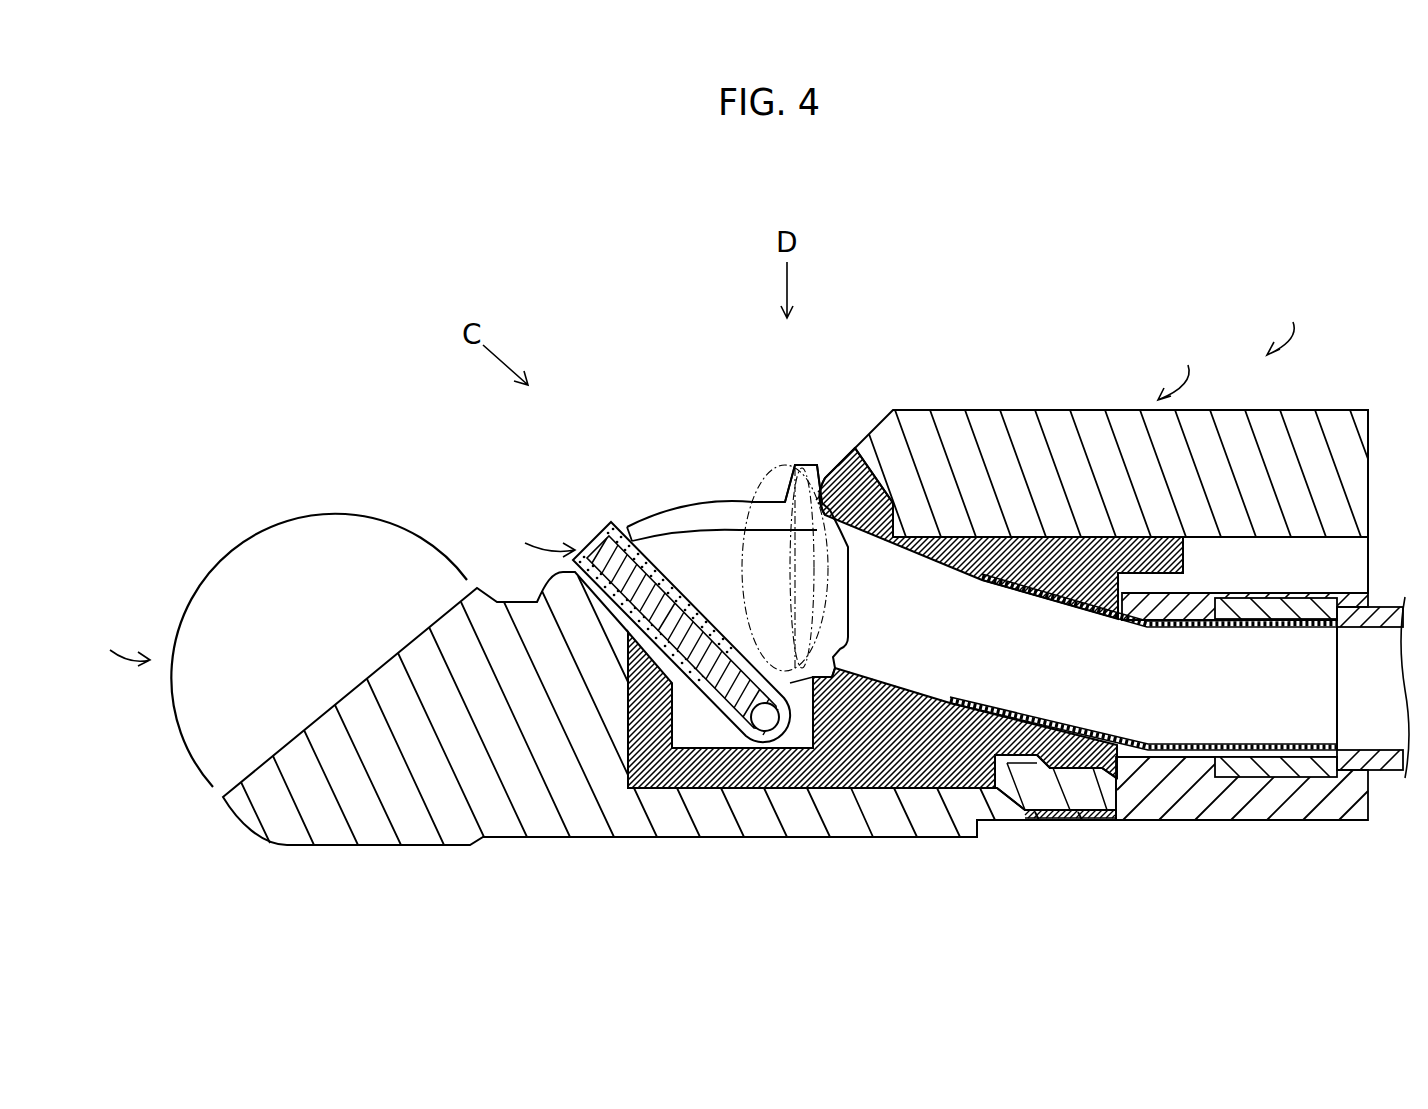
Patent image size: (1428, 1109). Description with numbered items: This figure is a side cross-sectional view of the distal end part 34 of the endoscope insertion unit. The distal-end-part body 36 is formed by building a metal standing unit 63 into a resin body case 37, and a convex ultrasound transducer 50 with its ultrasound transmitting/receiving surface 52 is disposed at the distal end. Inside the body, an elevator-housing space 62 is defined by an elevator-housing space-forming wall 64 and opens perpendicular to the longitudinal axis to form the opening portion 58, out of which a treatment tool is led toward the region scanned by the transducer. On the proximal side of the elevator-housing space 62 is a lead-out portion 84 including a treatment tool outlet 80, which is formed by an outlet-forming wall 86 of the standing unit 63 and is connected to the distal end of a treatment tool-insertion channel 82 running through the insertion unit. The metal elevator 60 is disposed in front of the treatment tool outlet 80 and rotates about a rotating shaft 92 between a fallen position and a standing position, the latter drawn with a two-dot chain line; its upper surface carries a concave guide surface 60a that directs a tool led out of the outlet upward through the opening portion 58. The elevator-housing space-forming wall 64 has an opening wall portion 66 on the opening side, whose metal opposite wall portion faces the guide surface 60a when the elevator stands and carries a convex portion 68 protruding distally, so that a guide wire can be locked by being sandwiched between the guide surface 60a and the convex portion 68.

The distal end part 34 is at (1287, 321).
The distal-end-part body 36 is at (1262, 575).
The body case 37 is at (1332, 415).
The ultrasound transducer 50 is at (119, 642).
The ultrasound transmitting/receiving surface 52 is at (240, 555).
The opening portion 58 is at (673, 528).
The elevator 60 is at (647, 678).
The guide surface 60a is at (637, 525).
The elevator-housing space 62 is at (703, 550).
The standing unit 63 is at (1033, 560).
The elevator-housing space-forming wall 64 is at (738, 546).
The opening wall portion 66 is at (692, 558).
The convex portion 68 is at (825, 450).
The treatment tool outlet 80 is at (850, 607).
The treatment tool-insertion channel 82 is at (1092, 710).
The lead-out portion 84 is at (809, 696).
The outlet-forming wall 86 is at (925, 588).
The rotating shaft 92 is at (770, 730).